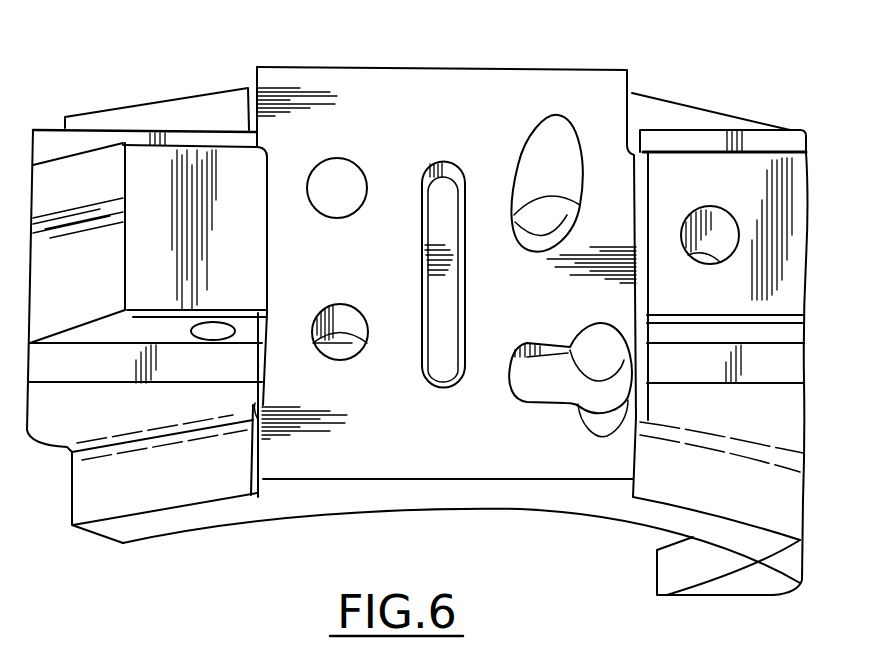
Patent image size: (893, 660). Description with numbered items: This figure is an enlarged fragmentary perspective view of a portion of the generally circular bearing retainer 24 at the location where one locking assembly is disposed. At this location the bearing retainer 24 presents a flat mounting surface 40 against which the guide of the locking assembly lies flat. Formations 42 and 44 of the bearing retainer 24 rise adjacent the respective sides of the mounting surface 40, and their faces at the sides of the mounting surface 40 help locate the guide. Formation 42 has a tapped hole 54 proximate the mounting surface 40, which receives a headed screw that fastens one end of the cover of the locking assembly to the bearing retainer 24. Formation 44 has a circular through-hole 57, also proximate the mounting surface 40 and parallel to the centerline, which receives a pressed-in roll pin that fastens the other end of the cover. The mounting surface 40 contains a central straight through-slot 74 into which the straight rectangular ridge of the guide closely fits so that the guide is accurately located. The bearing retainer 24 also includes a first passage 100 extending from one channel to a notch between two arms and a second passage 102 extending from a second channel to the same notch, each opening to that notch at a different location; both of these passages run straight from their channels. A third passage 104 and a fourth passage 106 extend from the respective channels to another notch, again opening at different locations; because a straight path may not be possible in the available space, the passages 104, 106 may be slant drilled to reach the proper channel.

The bearing retainer 24 is at (675, 100).
The mounting surface 40 is at (503, 83).
The formation 42 is at (777, 152).
The formation 44 is at (85, 163).
The tapped hole 54 is at (710, 227).
The circular through-hole 57 is at (213, 335).
The through-slot 74 is at (442, 173).
The first passage 100 is at (330, 173).
The second passage 102 is at (335, 323).
The third passage 104 is at (537, 367).
The fourth passage 106 is at (555, 143).